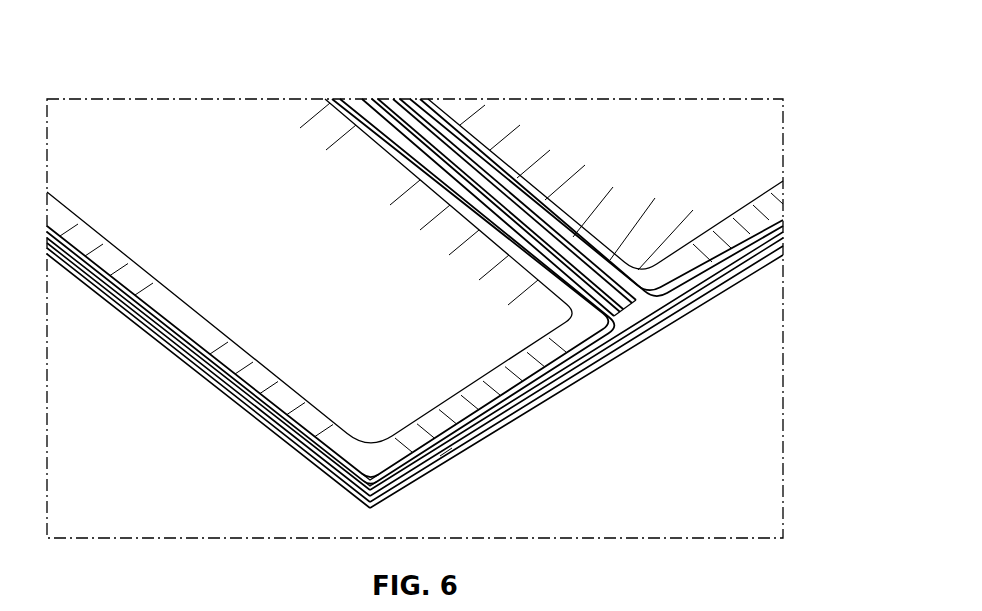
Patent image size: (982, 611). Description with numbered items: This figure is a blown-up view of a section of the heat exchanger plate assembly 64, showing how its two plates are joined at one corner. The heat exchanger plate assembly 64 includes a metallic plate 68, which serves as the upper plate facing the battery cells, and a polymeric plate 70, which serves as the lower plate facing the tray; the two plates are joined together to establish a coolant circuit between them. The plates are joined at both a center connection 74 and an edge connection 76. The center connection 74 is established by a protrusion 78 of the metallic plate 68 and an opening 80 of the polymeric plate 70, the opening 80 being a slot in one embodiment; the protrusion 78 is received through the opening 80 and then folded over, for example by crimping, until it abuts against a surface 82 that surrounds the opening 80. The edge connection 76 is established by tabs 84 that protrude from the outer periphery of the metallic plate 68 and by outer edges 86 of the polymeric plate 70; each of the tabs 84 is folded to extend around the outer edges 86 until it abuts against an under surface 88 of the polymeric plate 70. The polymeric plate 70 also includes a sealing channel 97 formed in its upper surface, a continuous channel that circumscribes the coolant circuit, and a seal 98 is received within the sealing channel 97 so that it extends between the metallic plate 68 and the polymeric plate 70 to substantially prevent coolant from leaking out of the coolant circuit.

The heat exchanger plate assembly 64 is at (670, 86).
The metallic plate 68 is at (668, 333).
The polymeric plate 70 is at (760, 135).
The center connection 74 is at (412, 156).
The edge connection 76 is at (243, 430).
The protrusion 78 is at (464, 178).
The opening 80 is at (517, 210).
The surface 82 is at (578, 238).
The tabs 84 is at (283, 416).
The outer edges 86 is at (373, 492).
The under surface 88 is at (192, 337).
The sealing channel 97 is at (516, 392).
The seal 98 is at (458, 450).